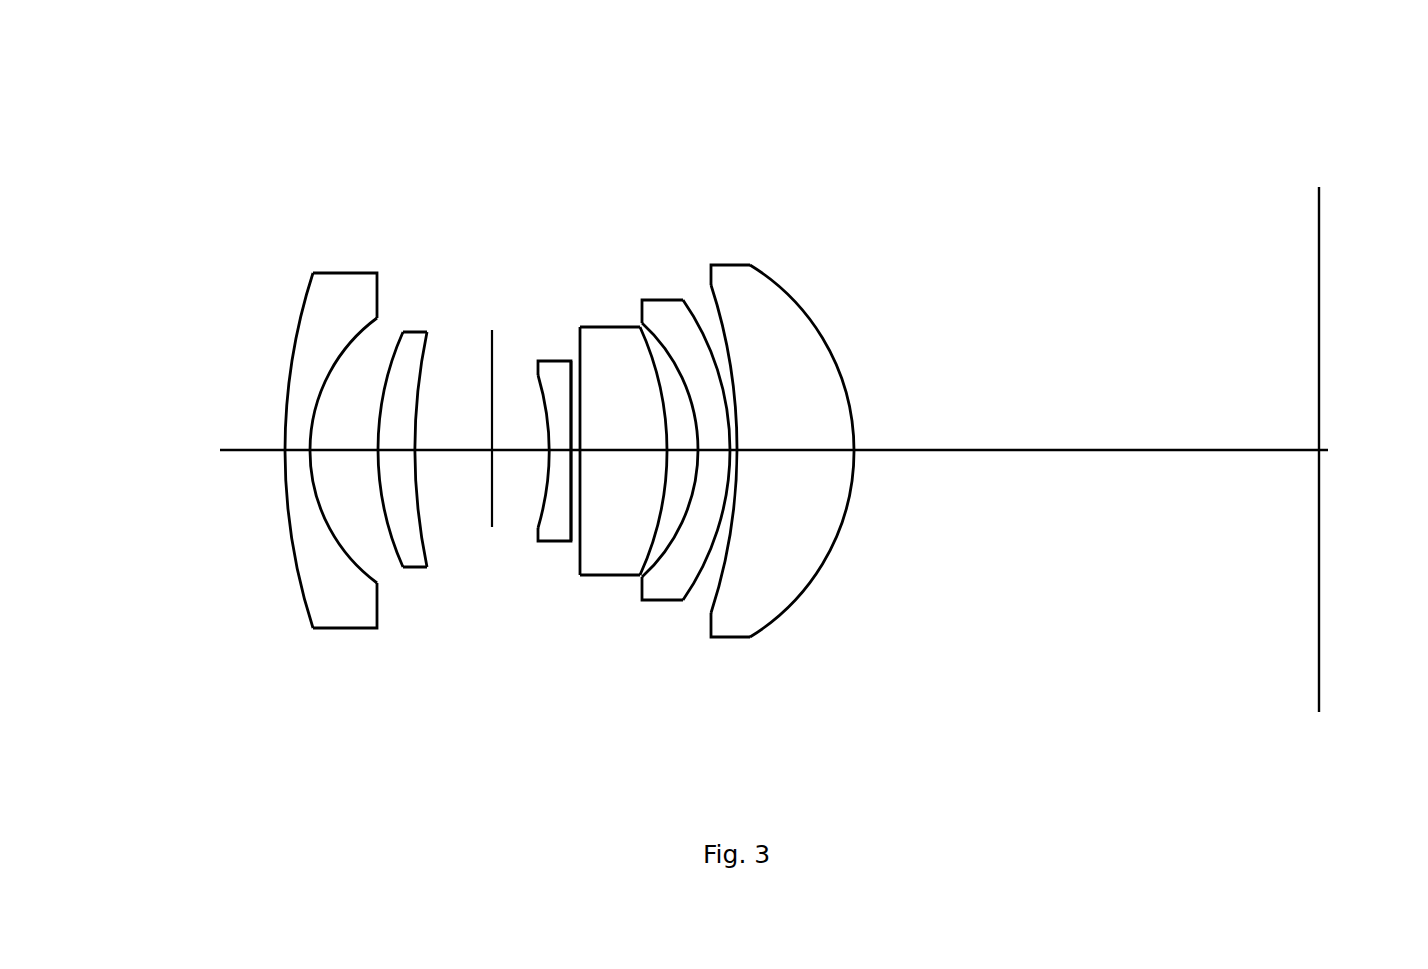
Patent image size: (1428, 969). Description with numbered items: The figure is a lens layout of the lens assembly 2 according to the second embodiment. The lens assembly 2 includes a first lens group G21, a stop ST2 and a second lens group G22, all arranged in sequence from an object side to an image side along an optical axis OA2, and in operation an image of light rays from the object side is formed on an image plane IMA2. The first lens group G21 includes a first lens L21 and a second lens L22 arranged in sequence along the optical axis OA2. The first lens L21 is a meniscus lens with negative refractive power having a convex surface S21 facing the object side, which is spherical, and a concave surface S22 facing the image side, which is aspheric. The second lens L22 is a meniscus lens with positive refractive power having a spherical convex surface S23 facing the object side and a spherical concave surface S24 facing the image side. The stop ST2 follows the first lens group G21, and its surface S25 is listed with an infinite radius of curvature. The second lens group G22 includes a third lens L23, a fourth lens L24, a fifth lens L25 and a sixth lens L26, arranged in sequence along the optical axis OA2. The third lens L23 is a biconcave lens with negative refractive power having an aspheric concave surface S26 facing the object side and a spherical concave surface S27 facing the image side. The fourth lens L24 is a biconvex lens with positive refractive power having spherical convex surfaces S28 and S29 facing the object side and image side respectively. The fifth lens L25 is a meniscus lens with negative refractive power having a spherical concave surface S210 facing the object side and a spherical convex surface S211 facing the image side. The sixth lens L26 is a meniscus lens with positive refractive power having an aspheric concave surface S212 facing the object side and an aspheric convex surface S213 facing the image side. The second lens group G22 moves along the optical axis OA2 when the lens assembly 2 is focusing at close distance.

The lens assembly 2 is at (198, 85).
The first lens group G21 is at (397, 133).
The second lens group G22 is at (790, 166).
The first lens L21 is at (340, 273).
The second lens L22 is at (417, 332).
The third lens L23 is at (555, 361).
The fourth lens L24 is at (608, 327).
The fifth lens L25 is at (663, 300).
The sixth lens L26 is at (742, 265).
The stop ST2 is at (492, 335).
The optical axis OA2 is at (228, 452).
The image plane IMA2 is at (1319, 187).
The convex surface S21 is at (292, 552).
The concave surface S22 is at (337, 545).
The convex surface S23 is at (388, 530).
The concave surface S24 is at (422, 517).
The stop surface S25 is at (492, 527).
The concave surface S26 is at (538, 515).
The concave surface S27 is at (570, 500).
The convex surface S28 is at (582, 550).
The convex surface S29 is at (660, 517).
The concave surface S210 is at (645, 600).
The convex surface S211 is at (694, 583).
The concave surface S212 is at (715, 605).
The convex surface S213 is at (773, 617).